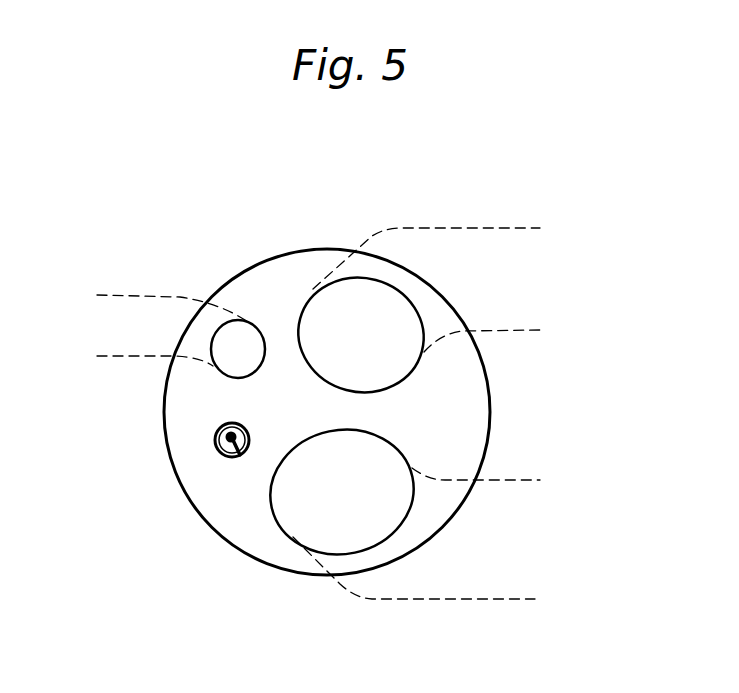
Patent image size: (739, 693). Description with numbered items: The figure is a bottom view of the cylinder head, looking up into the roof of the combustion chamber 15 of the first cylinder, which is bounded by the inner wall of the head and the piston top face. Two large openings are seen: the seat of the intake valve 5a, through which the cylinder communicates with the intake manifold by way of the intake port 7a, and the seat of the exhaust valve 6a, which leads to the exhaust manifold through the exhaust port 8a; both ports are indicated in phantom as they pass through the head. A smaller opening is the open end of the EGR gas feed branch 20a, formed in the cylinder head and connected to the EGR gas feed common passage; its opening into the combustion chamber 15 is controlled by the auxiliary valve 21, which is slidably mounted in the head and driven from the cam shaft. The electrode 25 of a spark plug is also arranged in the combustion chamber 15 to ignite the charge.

The combustion chamber 15 is at (216, 501).
The auxiliary valve 21 is at (249, 330).
The exhaust valve 6a is at (352, 298).
The intake valve 5a is at (302, 524).
The electrode of a spark plug 25 is at (215, 443).
The EGR gas feed branch 20a is at (138, 356).
The exhaust port 8a is at (440, 230).
The intake port 7a is at (453, 592).